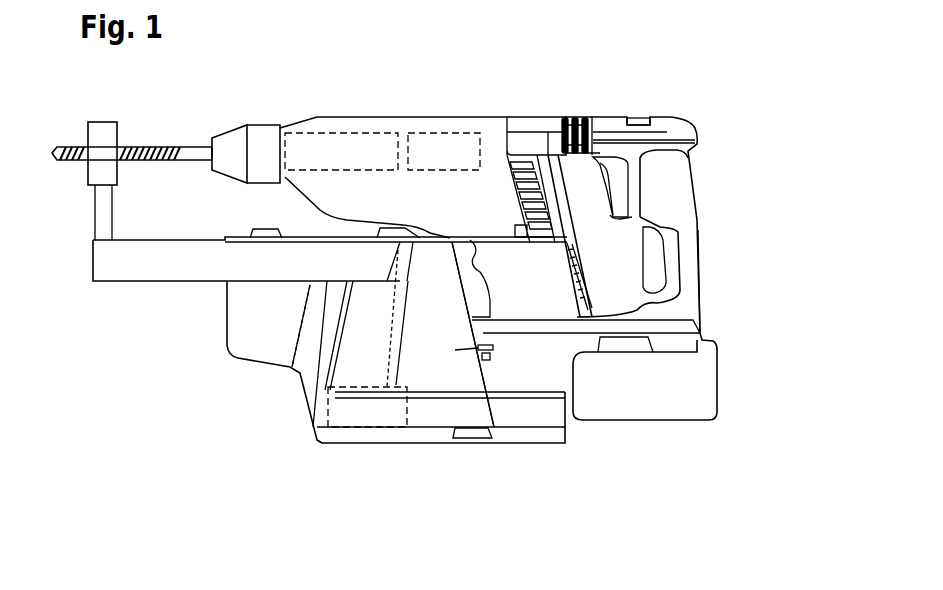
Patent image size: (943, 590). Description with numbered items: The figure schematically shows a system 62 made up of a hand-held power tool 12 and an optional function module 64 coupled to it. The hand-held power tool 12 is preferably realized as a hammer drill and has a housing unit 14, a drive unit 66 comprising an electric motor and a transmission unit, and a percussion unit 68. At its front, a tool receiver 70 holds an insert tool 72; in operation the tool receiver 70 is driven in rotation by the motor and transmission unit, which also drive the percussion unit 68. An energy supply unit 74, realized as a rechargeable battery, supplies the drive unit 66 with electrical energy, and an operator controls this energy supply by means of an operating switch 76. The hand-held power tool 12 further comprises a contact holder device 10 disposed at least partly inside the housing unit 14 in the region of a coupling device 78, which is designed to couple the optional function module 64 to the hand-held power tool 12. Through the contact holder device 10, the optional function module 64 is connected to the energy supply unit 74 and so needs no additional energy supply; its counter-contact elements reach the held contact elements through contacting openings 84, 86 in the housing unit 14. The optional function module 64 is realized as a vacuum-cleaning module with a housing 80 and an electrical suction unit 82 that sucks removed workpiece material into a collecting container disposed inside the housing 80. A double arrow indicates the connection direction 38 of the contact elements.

The contact holder device 10 is at (498, 372).
The hand-held power tool 12 is at (586, 102).
The housing unit 14 is at (404, 117).
The connection direction 38 is at (702, 455).
The system 62 is at (682, 93).
The optional function module 64 is at (295, 404).
The drive unit 66 is at (445, 133).
The percussion unit 68 is at (345, 133).
The tool receiver 70 is at (262, 125).
The insert tool 72 is at (192, 146).
The energy supply unit 74 is at (707, 392).
The operating switch 76 is at (620, 187).
The coupling device 78 is at (497, 344).
The housing 80 is at (322, 445).
The electrical suction unit 82 is at (375, 428).
The contacting opening 84 is at (478, 348).
The contacting opening 86 is at (483, 357).